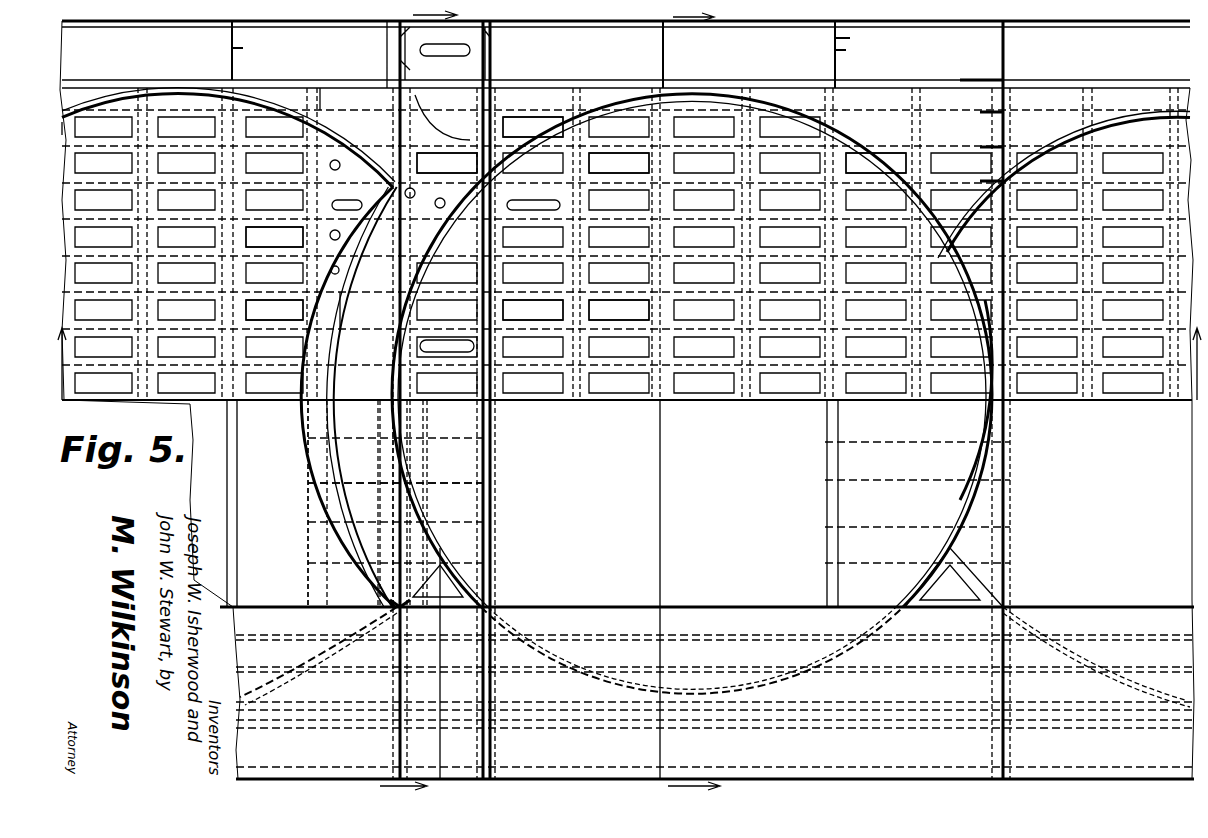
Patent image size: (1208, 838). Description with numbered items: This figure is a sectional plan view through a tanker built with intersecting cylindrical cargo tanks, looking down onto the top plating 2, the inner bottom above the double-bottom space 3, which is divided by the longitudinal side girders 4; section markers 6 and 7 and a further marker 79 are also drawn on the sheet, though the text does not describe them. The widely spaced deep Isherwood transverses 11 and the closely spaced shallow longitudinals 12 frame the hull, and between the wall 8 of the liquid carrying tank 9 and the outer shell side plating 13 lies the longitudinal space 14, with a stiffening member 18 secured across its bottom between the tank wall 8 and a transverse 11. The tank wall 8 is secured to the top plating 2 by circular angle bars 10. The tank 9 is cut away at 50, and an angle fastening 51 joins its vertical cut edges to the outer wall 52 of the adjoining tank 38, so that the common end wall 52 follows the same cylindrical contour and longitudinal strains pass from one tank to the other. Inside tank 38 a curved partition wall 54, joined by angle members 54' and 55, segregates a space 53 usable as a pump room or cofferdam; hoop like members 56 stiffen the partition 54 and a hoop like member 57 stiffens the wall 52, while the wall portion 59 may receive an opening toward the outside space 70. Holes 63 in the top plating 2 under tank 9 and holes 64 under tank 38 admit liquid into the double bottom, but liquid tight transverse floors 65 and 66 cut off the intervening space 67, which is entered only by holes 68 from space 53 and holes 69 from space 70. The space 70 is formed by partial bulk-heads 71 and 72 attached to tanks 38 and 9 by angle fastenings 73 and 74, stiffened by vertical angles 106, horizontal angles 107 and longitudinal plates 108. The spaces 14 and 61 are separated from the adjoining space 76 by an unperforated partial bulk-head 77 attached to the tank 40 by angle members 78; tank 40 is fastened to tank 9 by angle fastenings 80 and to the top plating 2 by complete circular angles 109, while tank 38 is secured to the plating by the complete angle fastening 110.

The top plating 2 is at (172, 140).
The space between the inner and outer platings 3 is at (684, 401).
The longitudinal side walls or girders 4 is at (795, 88).
The section line 6 is at (629, 369).
The bottom girder 7 is at (268, 637).
The wall of the liquid carrying tank 8 is at (830, 160).
The liquid carrying tank 9 is at (700, 106).
The circular angle bars 10 is at (848, 146).
The Isherwood transverses 11 is at (232, 47).
The longitudinals of the Isherwood system 12 is at (805, 45).
The outer shell side plating 13 is at (320, 24).
The longitudinal space 14 is at (610, 50).
The stiffening member 18 is at (680, 88).
The tank 38 is at (270, 103).
The tank 40 is at (1110, 135).
The cutaway portion of the tank 50 is at (445, 245).
The angle fastening 51 is at (400, 252).
The outer wall of the tank 52 is at (462, 440).
The space between tanks 53 is at (372, 486).
The curved partition wall 54 is at (293, 503).
The angle member 54' is at (307, 231).
The angle member 55 is at (392, 604).
The hoop like members 56 is at (332, 312).
The hoop like member 57 is at (490, 472).
The portion of the wall of the tank 59 is at (447, 162).
The space 61 is at (590, 165).
The holes or orifices 63 is at (610, 340).
The holes 64 is at (270, 285).
The transverse floor 65 is at (398, 305).
The transverse floor 66 is at (492, 305).
The space in the double bottom 67 is at (395, 425).
The holes 68 is at (418, 346).
The holes 69 is at (400, 128).
The space outside the tanks 70 is at (492, 90).
The partial bulk-head 71 is at (328, 164).
The partial bulk-head 72 is at (470, 152).
The angle fastening 73 is at (365, 215).
The angle fastening 74 is at (492, 180).
The adjoining space 76 is at (1060, 50).
The unperforated partial bulk-head 77 is at (1003, 68).
The angle members 78 is at (1003, 183).
The ring frame side 79 is at (985, 385).
The angle fastenings 80 is at (948, 240).
The vertically disposed angles or stiffeners 106 is at (470, 130).
The horizontally disposed angles 107 is at (392, 27).
The longitudinal stiffening members or plates 108 is at (425, 44).
The complete circular angles 109 is at (1075, 150).
The complete angle fastening 110 is at (80, 112).